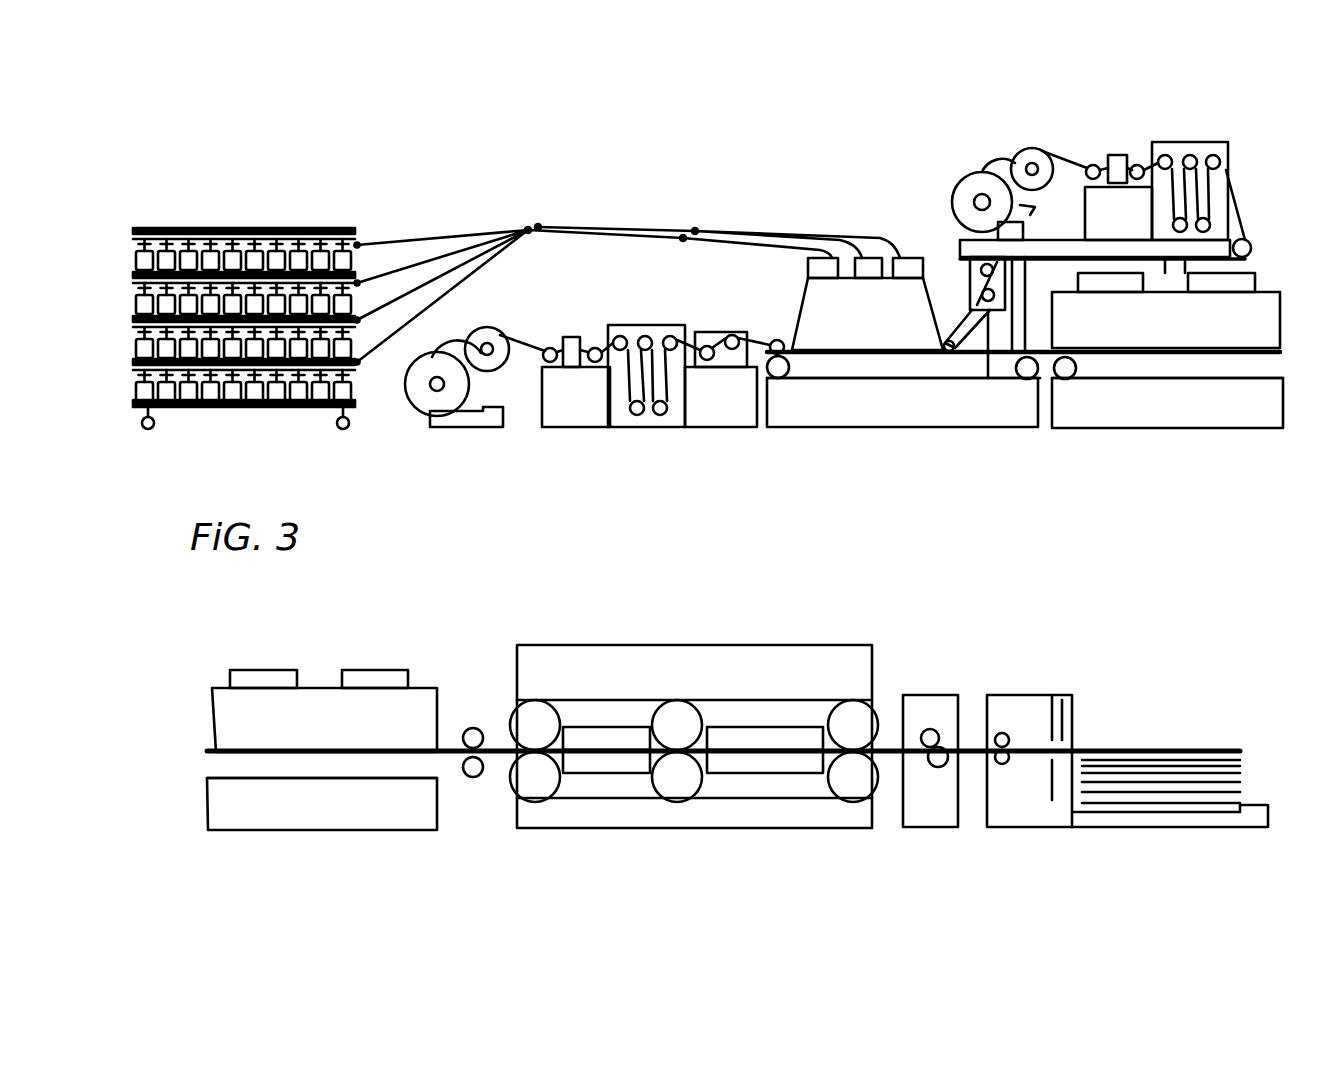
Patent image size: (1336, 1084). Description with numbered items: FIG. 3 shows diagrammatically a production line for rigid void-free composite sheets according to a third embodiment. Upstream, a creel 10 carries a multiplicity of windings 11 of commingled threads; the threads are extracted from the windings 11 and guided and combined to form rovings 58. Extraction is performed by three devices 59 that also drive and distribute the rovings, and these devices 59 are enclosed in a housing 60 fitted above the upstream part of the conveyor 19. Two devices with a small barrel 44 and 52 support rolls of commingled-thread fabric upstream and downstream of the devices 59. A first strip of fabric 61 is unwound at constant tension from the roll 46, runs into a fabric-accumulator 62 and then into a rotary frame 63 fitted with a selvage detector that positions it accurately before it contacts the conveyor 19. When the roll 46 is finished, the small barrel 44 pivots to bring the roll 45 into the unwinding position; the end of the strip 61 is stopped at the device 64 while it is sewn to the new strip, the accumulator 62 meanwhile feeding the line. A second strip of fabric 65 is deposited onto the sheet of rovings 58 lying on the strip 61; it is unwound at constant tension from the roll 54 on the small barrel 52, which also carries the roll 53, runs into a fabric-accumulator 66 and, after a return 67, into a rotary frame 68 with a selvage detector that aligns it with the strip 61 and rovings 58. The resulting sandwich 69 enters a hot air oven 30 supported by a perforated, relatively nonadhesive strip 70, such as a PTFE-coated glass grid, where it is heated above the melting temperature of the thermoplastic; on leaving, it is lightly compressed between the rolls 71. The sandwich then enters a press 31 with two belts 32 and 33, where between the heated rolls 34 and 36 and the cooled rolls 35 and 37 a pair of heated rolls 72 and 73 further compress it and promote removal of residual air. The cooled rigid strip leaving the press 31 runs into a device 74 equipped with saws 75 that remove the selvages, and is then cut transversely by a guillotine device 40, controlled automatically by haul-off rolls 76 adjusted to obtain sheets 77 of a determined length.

The creel 10 is at (232, 233).
The windings 11 is at (133, 258).
The rovings 58 is at (418, 262).
The roll 45 is at (420, 385).
The roll 46 is at (480, 330).
The small barrel 44 is at (480, 395).
The first strip of fabric 61 is at (522, 347).
The device 64 is at (577, 336).
The fabric-accumulator 62 is at (648, 428).
The rotary frame 63 is at (702, 345).
The housing 60 is at (867, 314).
The devices 59 is at (898, 257).
The conveyor 19 is at (880, 380).
The second strip of fabric 65 is at (1000, 380).
The rotary frame 68 is at (968, 290).
The roll 53 is at (968, 185).
The roll 54 is at (1030, 150).
The small barrel 52 is at (1033, 208).
The fabric-accumulator 66 is at (1192, 143).
The return 67 is at (1252, 248).
The hot air oven 30 is at (1268, 315).
The sandwich 69 is at (1135, 380).
The perforated nonadhesive strip 70 is at (1233, 380).
The rolls 71 is at (470, 728).
The press 31 is at (692, 845).
The belt 32 is at (610, 700).
The belt 33 is at (765, 805).
The heated roll 34 is at (530, 715).
The cooled roll 35 is at (850, 715).
The heated roll 72 is at (680, 715).
The heated roll 36 is at (538, 790).
The cooled roll 37 is at (865, 790).
The heated roll 73 is at (668, 790).
The device 74 is at (940, 830).
The saws 75 is at (940, 748).
The guillotine device 40 is at (1043, 830).
The haul-off rolls 76 is at (1003, 733).
The sheets 77 is at (1130, 750).